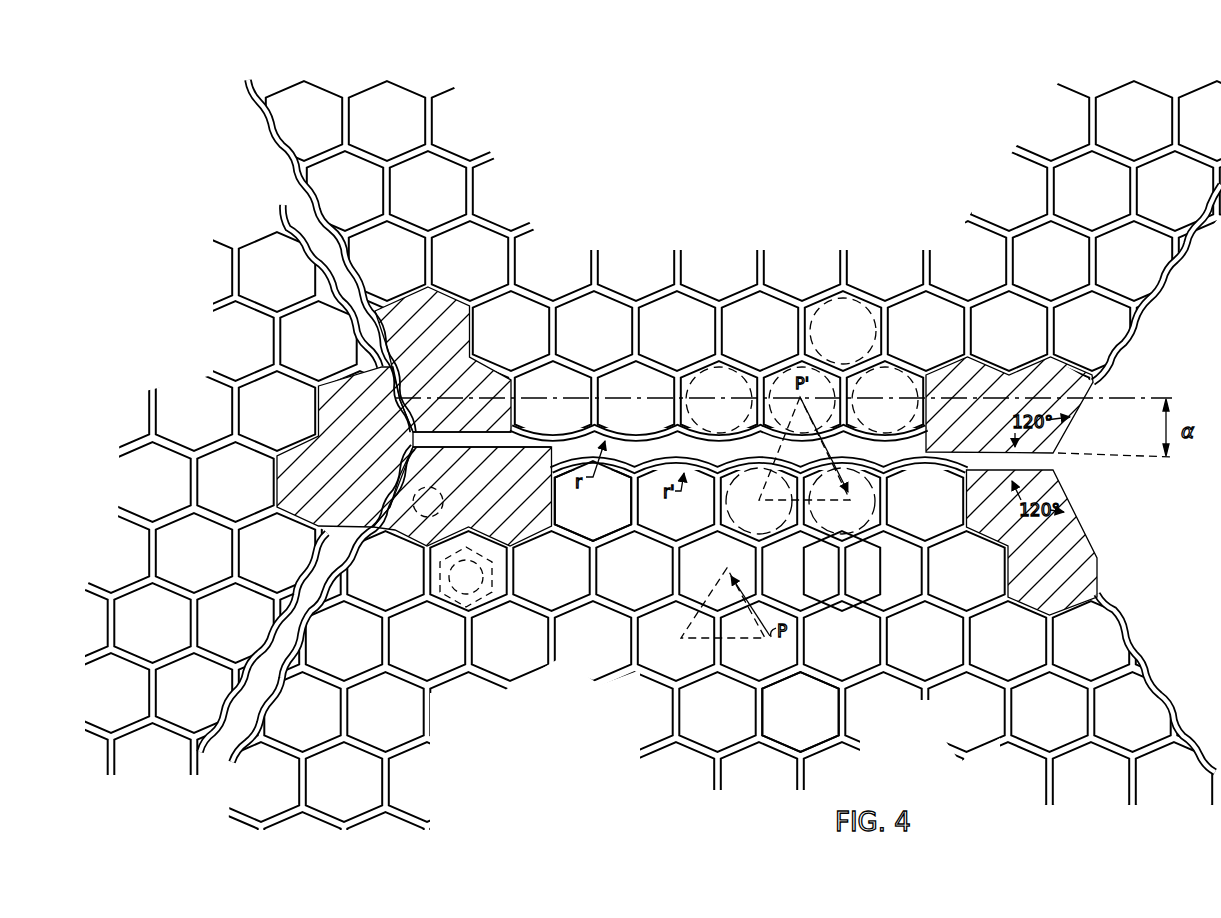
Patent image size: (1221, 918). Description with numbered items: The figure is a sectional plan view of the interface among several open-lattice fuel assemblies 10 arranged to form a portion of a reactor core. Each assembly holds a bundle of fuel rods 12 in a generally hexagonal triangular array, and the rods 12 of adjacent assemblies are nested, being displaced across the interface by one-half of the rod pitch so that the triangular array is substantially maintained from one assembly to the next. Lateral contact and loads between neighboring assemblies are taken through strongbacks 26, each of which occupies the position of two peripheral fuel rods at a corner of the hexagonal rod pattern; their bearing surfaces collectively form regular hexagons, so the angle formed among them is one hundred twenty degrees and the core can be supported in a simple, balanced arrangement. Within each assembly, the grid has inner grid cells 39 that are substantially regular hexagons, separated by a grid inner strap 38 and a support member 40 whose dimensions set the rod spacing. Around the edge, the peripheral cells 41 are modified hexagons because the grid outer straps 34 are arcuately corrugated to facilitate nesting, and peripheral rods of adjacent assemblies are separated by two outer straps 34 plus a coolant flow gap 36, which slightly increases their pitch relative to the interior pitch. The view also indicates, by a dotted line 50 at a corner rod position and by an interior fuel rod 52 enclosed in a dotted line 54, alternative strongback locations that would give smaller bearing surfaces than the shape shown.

The open-lattice fuel assembly 10 is at (753, 208).
The fuel rods 12 is at (789, 530).
The strongbacks 26 is at (363, 451).
The grid outer straps 34 is at (1124, 616).
The coolant flow gap 36 is at (584, 430).
The grid inner strap 38 is at (866, 612).
The inner grid cells 39 is at (807, 717).
The support member 40 is at (862, 306).
The peripheral cells 41 is at (890, 356).
The dotted line 50 is at (428, 487).
The interior fuel rod 52 is at (452, 588).
The dotted line 54 is at (475, 561).